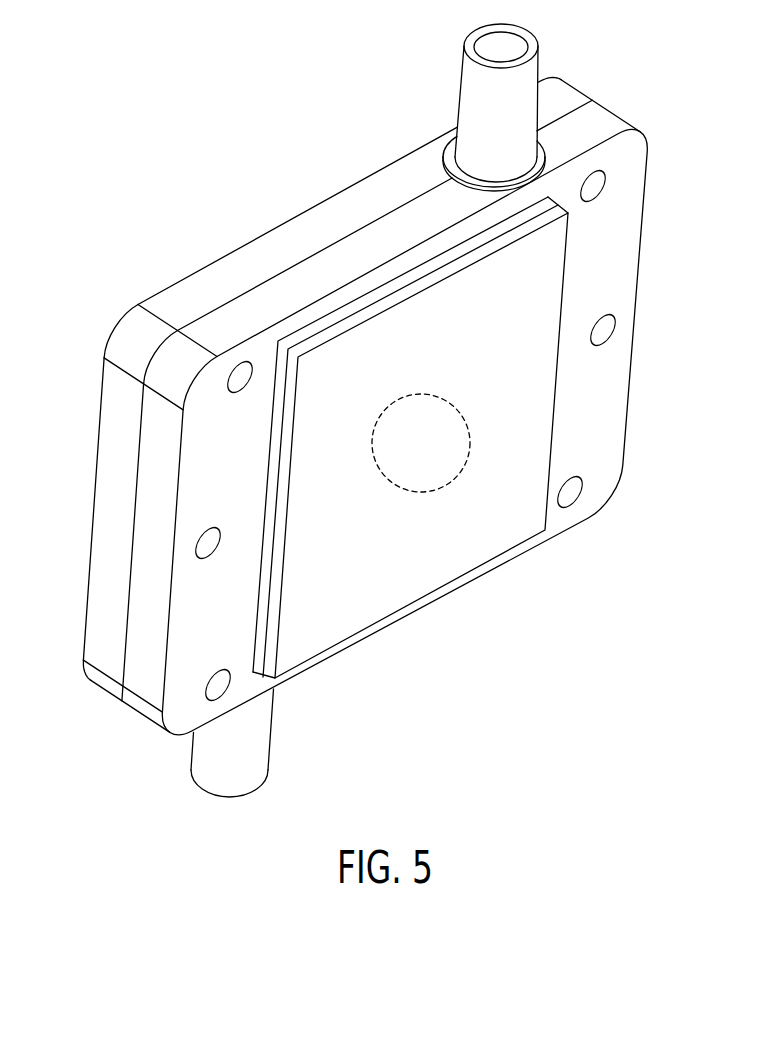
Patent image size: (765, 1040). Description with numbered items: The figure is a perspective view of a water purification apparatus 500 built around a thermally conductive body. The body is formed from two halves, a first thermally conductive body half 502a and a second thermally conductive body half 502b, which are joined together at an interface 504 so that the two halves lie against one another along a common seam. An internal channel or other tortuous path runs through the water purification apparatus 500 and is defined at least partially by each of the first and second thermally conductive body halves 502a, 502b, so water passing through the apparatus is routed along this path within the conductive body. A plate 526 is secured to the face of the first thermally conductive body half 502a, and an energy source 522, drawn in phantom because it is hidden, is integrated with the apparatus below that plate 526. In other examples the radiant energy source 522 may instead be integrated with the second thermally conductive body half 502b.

The water purification apparatus 500 is at (345, 410).
The first thermally conductive body half 502a is at (333, 263).
The second thermally conductive body half 502b is at (225, 282).
The interface 504 is at (395, 210).
The energy source 522 is at (426, 493).
The plate 526 is at (523, 321).